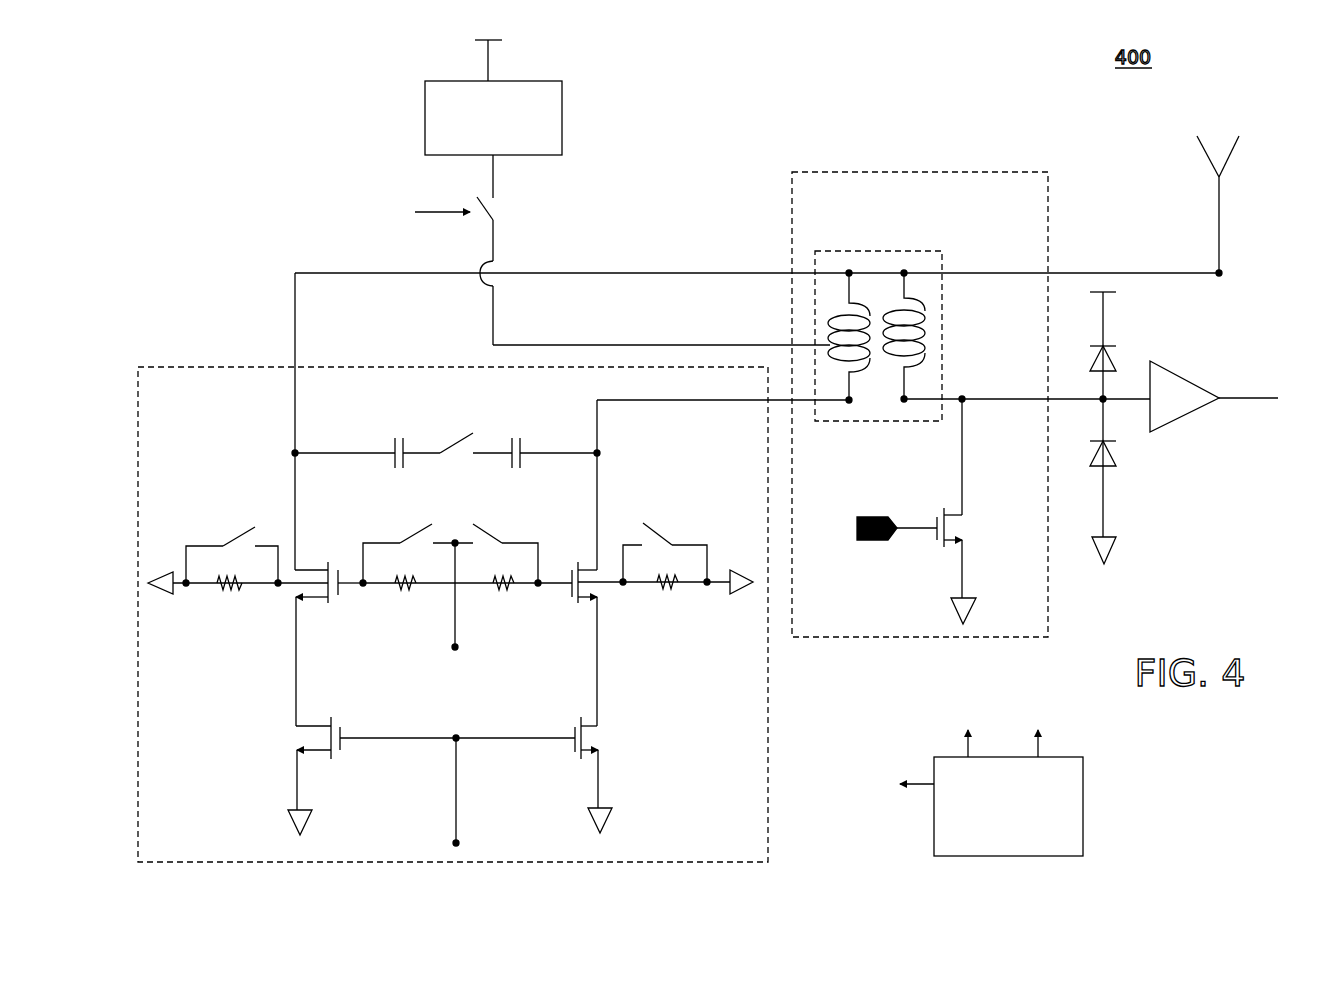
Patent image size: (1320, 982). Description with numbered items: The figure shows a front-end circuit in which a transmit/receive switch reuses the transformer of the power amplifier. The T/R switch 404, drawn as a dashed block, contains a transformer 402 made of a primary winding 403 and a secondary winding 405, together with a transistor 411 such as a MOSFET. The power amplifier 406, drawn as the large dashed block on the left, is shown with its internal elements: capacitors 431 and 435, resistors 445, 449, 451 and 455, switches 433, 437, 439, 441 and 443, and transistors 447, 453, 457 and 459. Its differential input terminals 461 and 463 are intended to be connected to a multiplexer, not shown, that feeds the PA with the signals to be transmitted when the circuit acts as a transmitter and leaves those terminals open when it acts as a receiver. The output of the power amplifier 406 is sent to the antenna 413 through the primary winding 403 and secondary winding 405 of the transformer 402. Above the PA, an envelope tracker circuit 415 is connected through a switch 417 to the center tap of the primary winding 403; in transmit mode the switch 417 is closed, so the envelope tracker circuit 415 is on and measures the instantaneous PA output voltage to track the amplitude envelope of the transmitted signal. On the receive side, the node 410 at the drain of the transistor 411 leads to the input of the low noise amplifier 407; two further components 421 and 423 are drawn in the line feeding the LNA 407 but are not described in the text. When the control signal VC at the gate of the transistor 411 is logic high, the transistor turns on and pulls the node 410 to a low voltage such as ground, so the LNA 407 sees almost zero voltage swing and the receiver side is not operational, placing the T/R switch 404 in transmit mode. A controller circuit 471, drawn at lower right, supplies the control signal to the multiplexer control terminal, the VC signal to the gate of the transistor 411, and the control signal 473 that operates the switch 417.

The transformer 402 is at (862, 251).
The primary winding 403 is at (828, 318).
The T/R switch 404 is at (968, 170).
The secondary winding 405 is at (934, 318).
The power amplifier 406 is at (232, 365).
The low noise amplifier 407 is at (1185, 425).
The node 410 is at (962, 396).
The transistor 411 is at (976, 530).
The antenna 413 is at (1195, 185).
The envelope tracker circuit 415 is at (568, 112).
The switch 417 is at (505, 210).
The diode 421 is at (1112, 470).
The diode 423 is at (1112, 346).
The capacitor 431 is at (392, 433).
The switch 433 is at (462, 432).
The capacitor 435 is at (516, 425).
The switch 437 is at (238, 530).
The switch 439 is at (410, 528).
The switch 441 is at (505, 528).
The switch 443 is at (660, 523).
The resistor 445 is at (668, 600).
The transistor 447 is at (562, 603).
The resistor 449 is at (493, 608).
The resistor 451 is at (403, 608).
The transistor 453 is at (326, 607).
The resistor 455 is at (232, 605).
The transistor 457 is at (288, 740).
The transistor 459 is at (608, 745).
The differential input terminal 461 is at (460, 660).
The differential input terminal 463 is at (452, 840).
The controller circuit 471 is at (1083, 820).
The control signal 473 is at (430, 208).